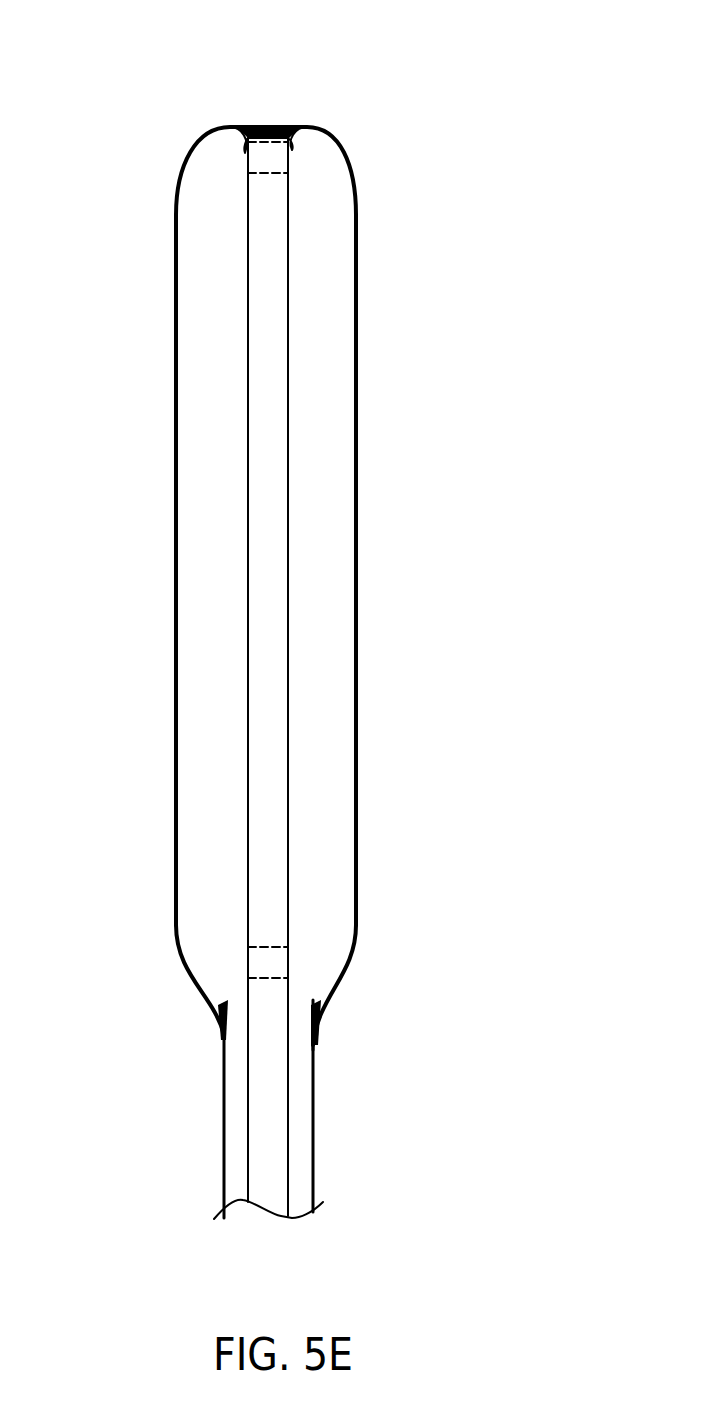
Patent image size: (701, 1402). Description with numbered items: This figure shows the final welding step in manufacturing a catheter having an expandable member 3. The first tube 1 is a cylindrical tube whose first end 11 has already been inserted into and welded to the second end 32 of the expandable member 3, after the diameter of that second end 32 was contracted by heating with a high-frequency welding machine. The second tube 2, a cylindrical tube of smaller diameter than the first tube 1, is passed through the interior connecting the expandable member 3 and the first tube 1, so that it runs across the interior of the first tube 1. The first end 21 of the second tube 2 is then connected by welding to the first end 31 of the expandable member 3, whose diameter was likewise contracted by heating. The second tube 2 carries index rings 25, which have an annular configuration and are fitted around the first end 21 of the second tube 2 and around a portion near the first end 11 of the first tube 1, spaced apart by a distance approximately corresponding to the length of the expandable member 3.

The first tube 1 is at (367, 1173).
The second tube 2 is at (338, 653).
The expandable member 3 is at (407, 483).
The first end of the first tube 11 is at (322, 1008).
The first end of the second tube 21 is at (248, 152).
The index ring 25 is at (277, 158).
The first end of the expandable member 31 is at (295, 128).
The second end of the expandable member 32 is at (320, 995).